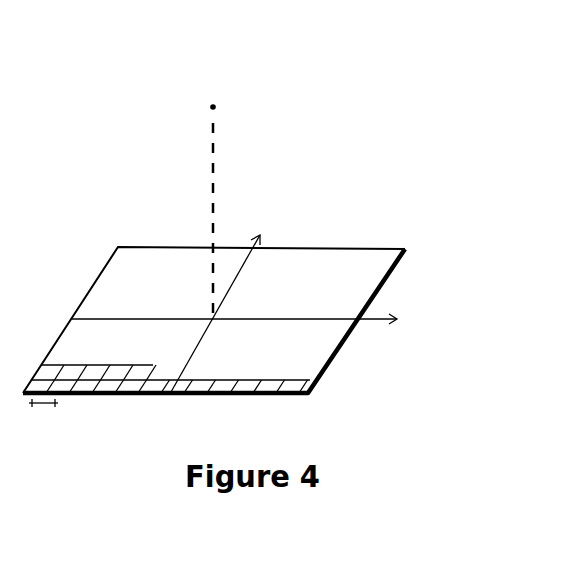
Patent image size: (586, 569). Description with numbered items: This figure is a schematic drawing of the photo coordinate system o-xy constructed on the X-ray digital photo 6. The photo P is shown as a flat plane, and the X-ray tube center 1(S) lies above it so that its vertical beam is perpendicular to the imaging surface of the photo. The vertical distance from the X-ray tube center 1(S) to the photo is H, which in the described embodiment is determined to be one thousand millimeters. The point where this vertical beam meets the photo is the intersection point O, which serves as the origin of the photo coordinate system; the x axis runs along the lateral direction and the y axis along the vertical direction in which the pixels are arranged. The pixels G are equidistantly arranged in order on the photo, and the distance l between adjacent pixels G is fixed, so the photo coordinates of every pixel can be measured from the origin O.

The X-ray tube center 1 is at (250, 170).
The X-ray digital photo 6 is at (271, 317).
The vertical distance from S to o H is at (196, 221).
The photo P is at (234, 299).
The intersection point o O is at (215, 313).
The pixel G is at (171, 379).
The distance between pixels l is at (43, 425).